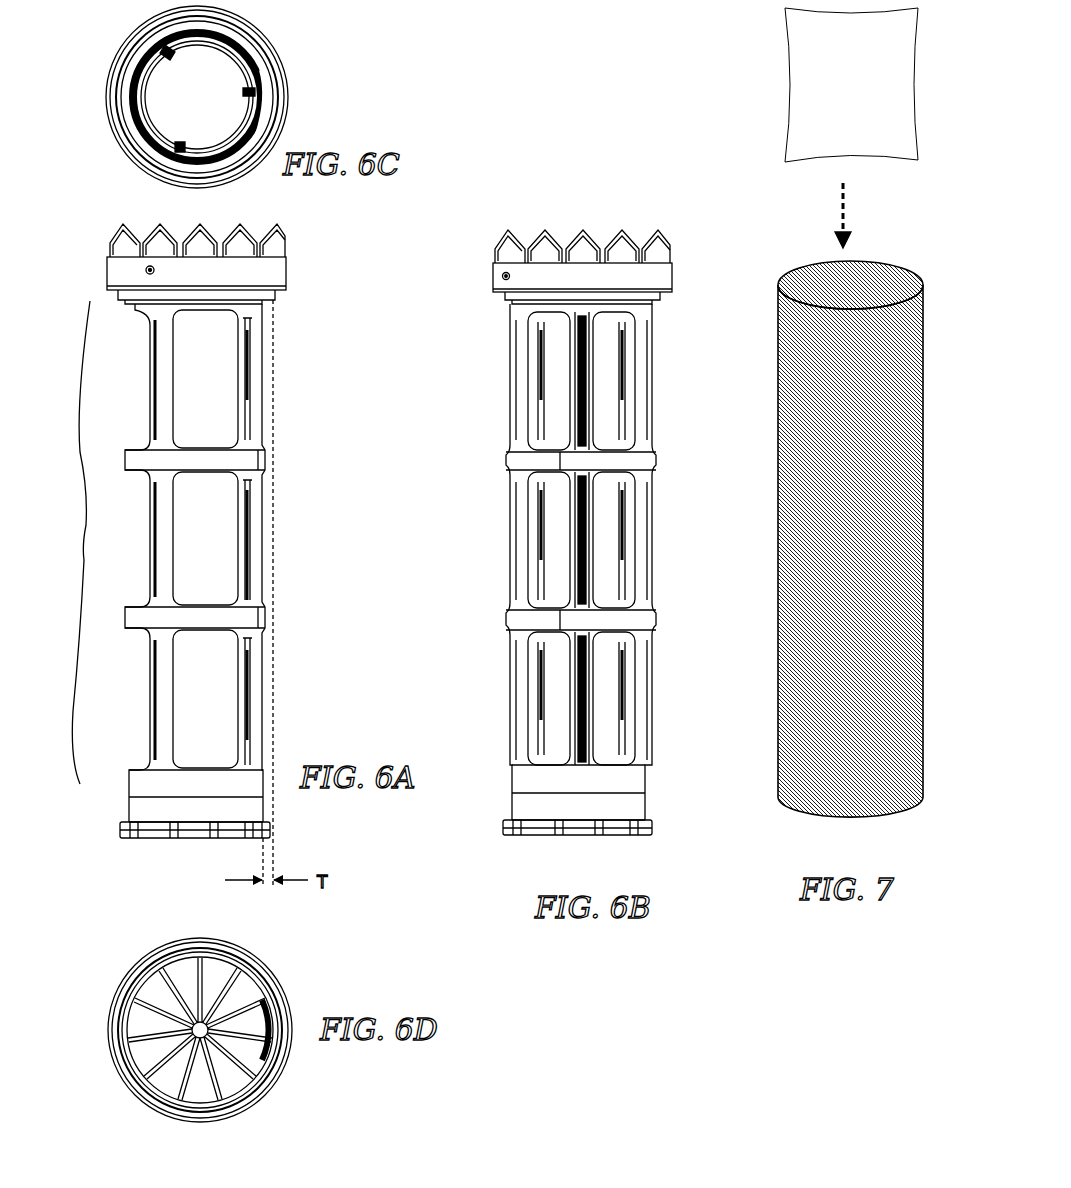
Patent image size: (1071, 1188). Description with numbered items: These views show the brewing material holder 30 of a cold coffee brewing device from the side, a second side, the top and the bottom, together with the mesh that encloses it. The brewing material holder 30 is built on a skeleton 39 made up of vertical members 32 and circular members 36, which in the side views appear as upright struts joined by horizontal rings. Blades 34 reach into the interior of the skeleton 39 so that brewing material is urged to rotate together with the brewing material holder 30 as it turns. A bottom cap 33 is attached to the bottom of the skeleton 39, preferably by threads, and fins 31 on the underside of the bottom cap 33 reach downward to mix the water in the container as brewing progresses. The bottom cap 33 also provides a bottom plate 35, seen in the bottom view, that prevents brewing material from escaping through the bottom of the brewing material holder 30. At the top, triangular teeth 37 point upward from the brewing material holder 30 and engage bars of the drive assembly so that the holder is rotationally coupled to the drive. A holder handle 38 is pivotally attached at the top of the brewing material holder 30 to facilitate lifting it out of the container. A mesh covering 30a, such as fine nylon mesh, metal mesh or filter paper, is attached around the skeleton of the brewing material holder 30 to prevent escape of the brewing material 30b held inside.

In FIG. 6A, the brewing material holder 30 is at (300, 330).
In FIG. 6B, the brewing material holder 30 is at (480, 190).
In FIG. 6C, the brewing material holder 30 is at (295, 52).
In FIG. 6D, the brewing material holder 30 is at (310, 975).
In FIG. 7, the mesh covering 30a is at (772, 246).
In FIG. 7, the brewing material 30b is at (772, 70).
In FIG. 6A, the fins 31 is at (138, 840).
In FIG. 6B, the fins 31 is at (512, 838).
In FIG. 6D, the fins 31 is at (280, 1040).
In FIG. 6A, the vertical members 32 is at (176, 390).
In FIG. 6B, the vertical members 32 is at (515, 352).
In FIG. 6A, the bottom cap 33 is at (196, 796).
In FIG. 6B, the bottom cap 33 is at (556, 816).
In FIG. 6A, the blades 34 is at (262, 355).
In FIG. 6B, the blades 34 is at (525, 418).
In FIG. 6C, the blades 34 is at (172, 50).
In FIG. 6C, the bottom plate 35 is at (191, 95).
In FIG. 6D, the bottom plate 35 is at (200, 1030).
In FIG. 6A, the circular members 36 is at (205, 458).
In FIG. 6B, the circular members 36 is at (550, 462).
In FIG. 6A, the triangular teeth 37 is at (246, 240).
In FIG. 6B, the triangular teeth 37 is at (622, 245).
In FIG. 6C, the holder handle 38 is at (288, 117).
In FIG. 6A, the skeleton 39 is at (84, 539).